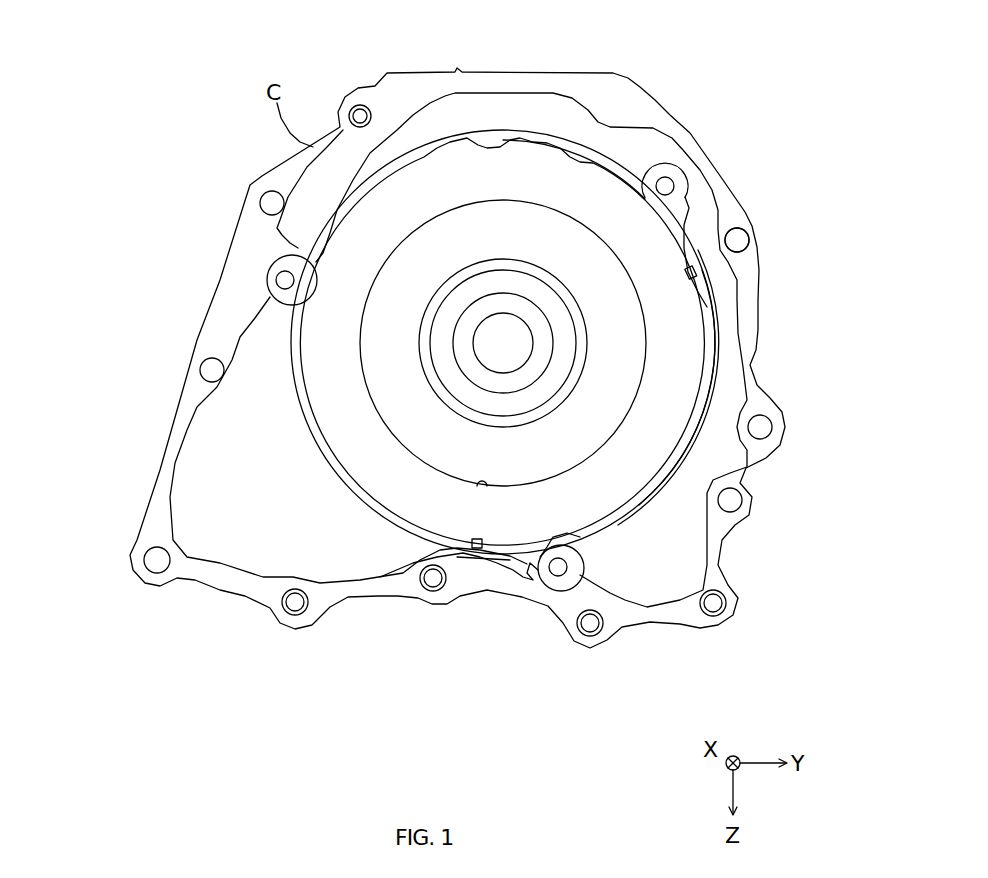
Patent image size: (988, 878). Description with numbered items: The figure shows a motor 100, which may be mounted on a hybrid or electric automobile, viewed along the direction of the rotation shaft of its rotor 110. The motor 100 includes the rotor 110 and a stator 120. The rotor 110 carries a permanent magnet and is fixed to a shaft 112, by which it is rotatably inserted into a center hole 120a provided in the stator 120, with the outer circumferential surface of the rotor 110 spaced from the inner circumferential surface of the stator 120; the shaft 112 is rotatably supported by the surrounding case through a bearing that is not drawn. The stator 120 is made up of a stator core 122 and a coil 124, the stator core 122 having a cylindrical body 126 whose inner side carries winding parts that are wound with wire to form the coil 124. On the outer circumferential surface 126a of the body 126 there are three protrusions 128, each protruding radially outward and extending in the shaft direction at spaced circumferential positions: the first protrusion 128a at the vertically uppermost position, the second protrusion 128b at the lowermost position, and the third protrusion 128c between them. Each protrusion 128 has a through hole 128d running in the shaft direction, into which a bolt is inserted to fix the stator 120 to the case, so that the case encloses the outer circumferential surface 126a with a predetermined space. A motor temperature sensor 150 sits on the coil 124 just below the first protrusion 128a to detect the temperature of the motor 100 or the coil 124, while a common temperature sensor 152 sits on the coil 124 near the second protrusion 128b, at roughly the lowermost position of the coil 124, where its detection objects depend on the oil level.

The motor 100 is at (414, 358).
The rotor 110 is at (420, 358).
The stator 120 is at (400, 360).
The center hole 120a is at (504, 570).
The shaft 112 is at (453, 484).
The stator core 122 is at (761, 387).
The coil 124 is at (594, 356).
The body 126 is at (747, 387).
The outer circumferential surface 126a is at (595, 103).
The protrusion 128 is at (504, 424).
The first protrusion 128a is at (795, 235).
The second protrusion 128b is at (639, 625).
The third protrusion 128c is at (225, 226).
The through hole 128d is at (465, 423).
The motor temperature sensor 150 is at (779, 299).
The common temperature sensor 152 is at (451, 618).